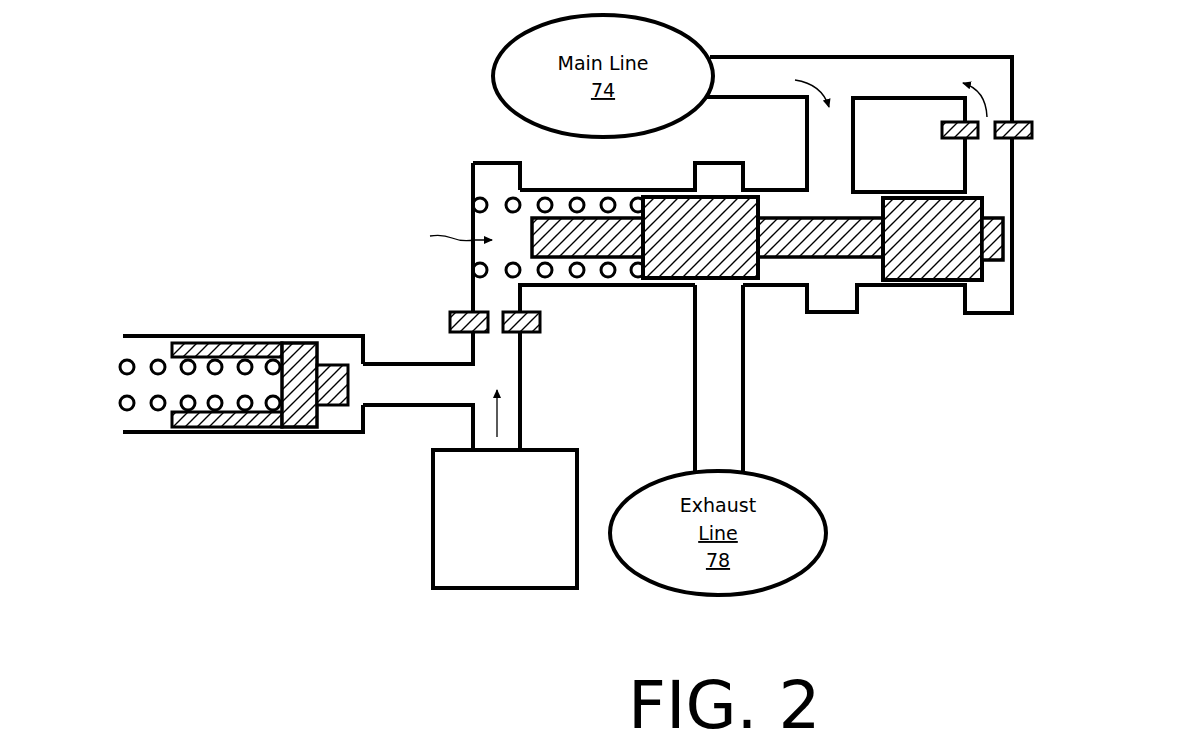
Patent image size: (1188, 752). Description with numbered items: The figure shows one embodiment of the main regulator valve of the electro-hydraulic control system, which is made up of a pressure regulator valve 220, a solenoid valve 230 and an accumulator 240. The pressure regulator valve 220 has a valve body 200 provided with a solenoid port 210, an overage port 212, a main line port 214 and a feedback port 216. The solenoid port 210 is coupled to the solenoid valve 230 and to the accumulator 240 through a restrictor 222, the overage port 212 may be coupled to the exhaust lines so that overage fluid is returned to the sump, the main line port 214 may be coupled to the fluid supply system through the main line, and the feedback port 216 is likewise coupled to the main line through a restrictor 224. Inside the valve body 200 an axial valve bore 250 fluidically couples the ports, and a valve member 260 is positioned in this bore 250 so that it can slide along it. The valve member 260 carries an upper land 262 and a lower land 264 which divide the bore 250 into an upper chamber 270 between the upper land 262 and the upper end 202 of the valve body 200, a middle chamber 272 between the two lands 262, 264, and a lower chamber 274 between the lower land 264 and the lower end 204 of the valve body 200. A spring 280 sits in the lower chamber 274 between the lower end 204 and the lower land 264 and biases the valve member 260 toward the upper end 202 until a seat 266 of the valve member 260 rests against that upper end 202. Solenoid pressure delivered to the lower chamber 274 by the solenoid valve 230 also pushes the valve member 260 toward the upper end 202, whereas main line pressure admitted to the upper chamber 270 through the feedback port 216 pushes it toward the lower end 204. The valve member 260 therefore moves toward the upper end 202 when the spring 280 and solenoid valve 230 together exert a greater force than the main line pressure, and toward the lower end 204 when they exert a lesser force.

The valve body 200 is at (780, 288).
The upper end 202 is at (1012, 262).
The lower end 204 is at (472, 257).
The solenoid port 210 is at (475, 293).
The overage port 212 is at (725, 352).
The main line port 214 is at (805, 140).
The feedback port 216 is at (1010, 170).
The pressure regulator valve 220 is at (895, 273).
The restrictor 222 is at (540, 330).
The restrictor 224 is at (1032, 125).
The solenoid valve 230 is at (505, 489).
The accumulator 240 is at (243, 458).
The axial valve bore 250 is at (437, 234).
The valve member 260 is at (937, 300).
The upper land 262 is at (985, 200).
The lower land 264 is at (696, 262).
The seat 266 is at (1005, 225).
The upper chamber 270 is at (1000, 310).
The middle chamber 272 is at (827, 297).
The lower chamber 274 is at (492, 178).
The spring 280 is at (476, 198).